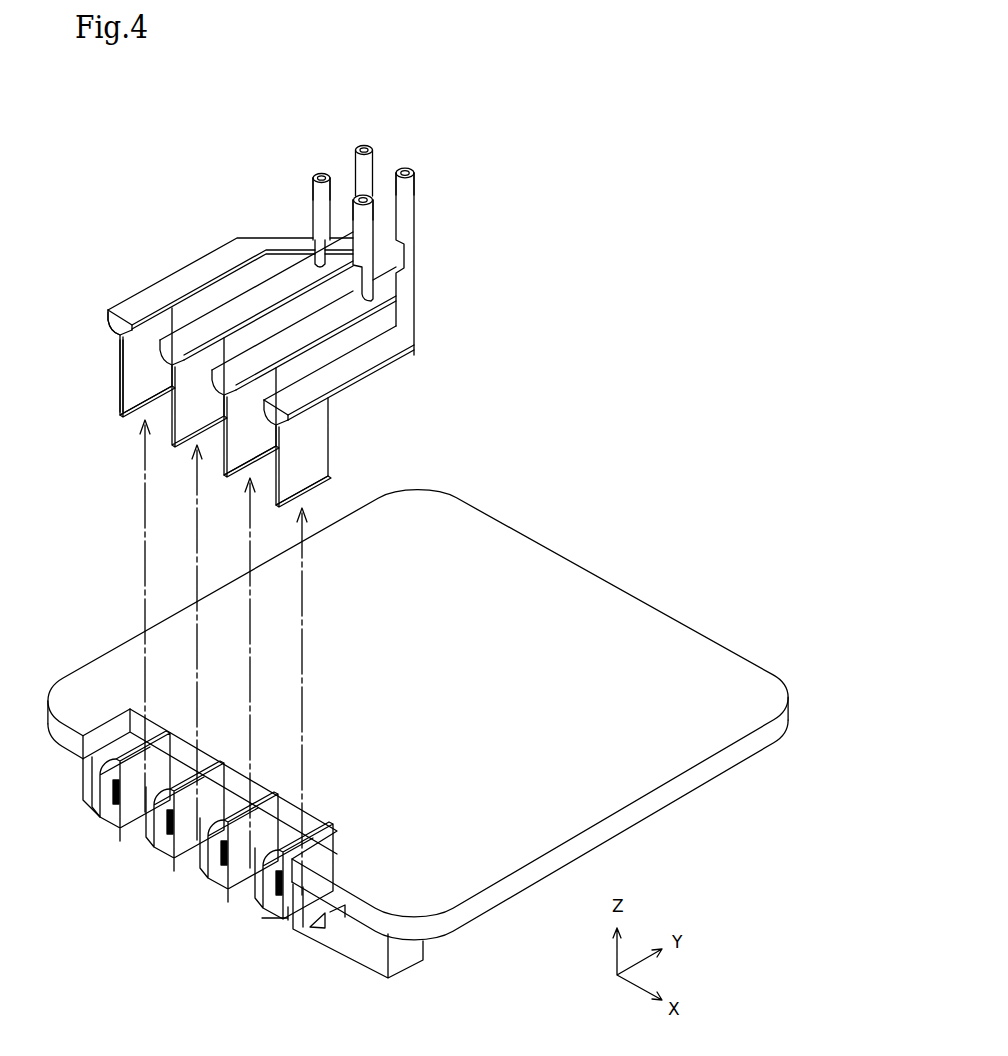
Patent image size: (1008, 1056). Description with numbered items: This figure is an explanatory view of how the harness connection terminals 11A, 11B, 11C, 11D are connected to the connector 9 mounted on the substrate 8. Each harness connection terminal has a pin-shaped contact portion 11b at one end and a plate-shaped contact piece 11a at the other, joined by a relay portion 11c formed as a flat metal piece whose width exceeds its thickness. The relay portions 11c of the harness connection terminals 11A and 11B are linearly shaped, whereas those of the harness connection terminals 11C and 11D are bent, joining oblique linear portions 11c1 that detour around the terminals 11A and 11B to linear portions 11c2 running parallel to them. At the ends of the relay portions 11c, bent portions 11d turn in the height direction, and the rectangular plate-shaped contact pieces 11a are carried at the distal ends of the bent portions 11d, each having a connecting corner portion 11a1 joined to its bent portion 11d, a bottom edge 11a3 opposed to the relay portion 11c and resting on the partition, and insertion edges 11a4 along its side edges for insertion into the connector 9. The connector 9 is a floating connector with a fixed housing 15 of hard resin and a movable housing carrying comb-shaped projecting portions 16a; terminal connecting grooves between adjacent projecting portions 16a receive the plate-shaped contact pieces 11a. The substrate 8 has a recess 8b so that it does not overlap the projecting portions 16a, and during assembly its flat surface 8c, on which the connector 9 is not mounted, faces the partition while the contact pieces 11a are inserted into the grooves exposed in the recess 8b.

The substrate 8 is at (418, 715).
The recess 8b is at (310, 830).
The flat surface 8c is at (688, 647).
The connector 9 is at (251, 877).
The fixed housing 15 is at (357, 947).
The comb-shaped projecting portions 16a is at (138, 828).
The plate-shaped contact pieces 11a is at (227, 395).
The connecting corner portions 11a1 is at (127, 350).
The bottom edges 11a3 is at (137, 303).
The insertion edges 11a4 is at (135, 417).
The pin-shaped contact portions 11b is at (370, 151).
The relay portions 11c is at (325, 289).
The oblique linear portions 11c1 is at (500, 302).
The linear portions 11c2 is at (463, 397).
The bent portions 11d is at (117, 335).
The harness connection terminal 11A is at (318, 178).
The harness connection terminal 11B is at (356, 198).
The harness connection terminal 11C is at (364, 153).
The harness connection terminal 11D is at (413, 200).